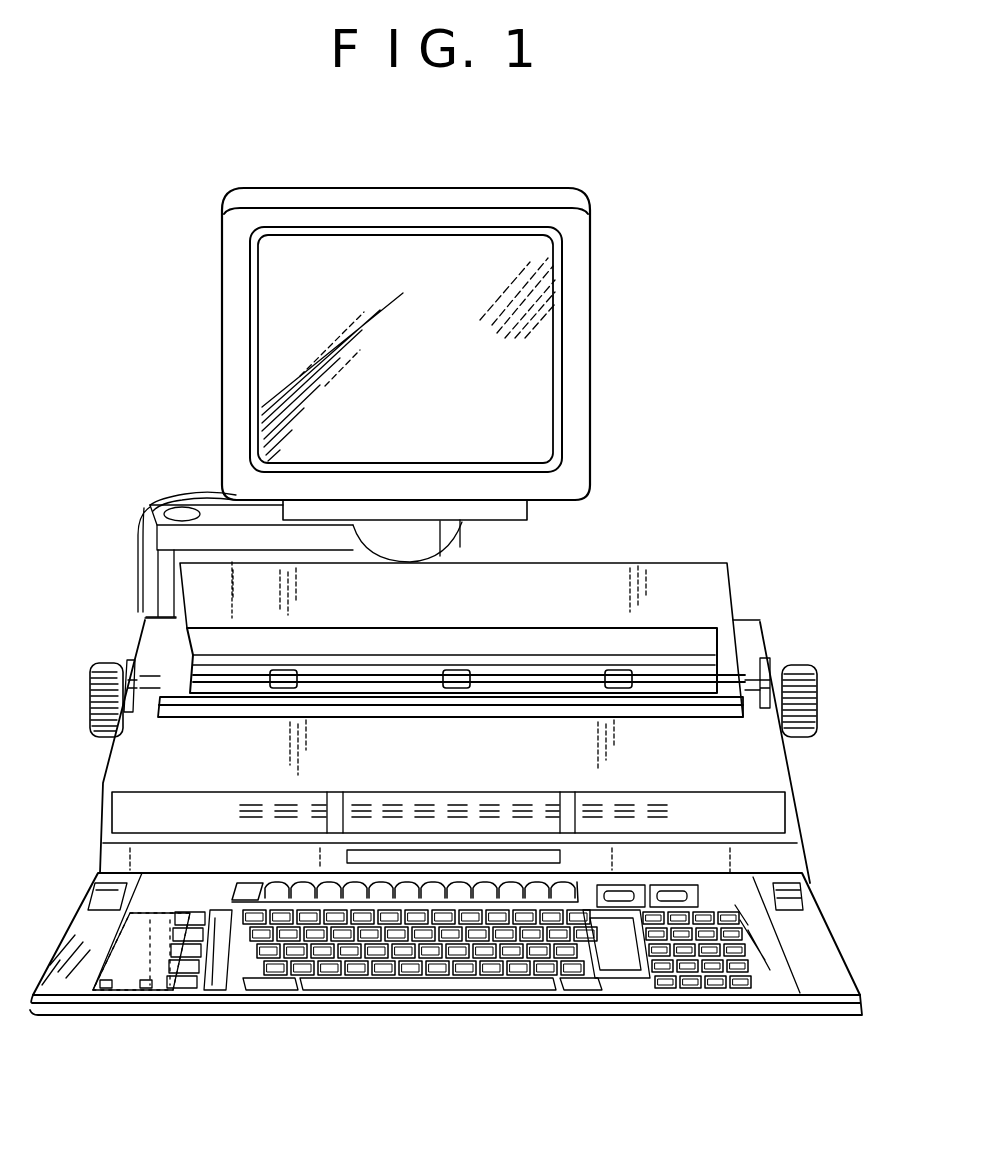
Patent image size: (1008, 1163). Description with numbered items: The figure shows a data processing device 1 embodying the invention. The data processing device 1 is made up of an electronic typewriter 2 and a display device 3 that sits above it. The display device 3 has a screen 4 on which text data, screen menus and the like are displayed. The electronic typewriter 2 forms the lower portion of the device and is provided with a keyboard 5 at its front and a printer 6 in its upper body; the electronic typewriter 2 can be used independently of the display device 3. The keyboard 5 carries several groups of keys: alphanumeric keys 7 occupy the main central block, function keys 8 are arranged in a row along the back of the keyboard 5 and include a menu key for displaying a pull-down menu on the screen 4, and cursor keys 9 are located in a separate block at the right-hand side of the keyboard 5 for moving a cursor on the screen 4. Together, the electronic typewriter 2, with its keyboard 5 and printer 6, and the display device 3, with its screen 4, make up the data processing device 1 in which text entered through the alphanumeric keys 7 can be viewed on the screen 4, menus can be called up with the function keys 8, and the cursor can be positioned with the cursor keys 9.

The data processing device 1 is at (714, 287).
The electronic typewriter 2 is at (733, 553).
The display device 3 is at (540, 186).
The screen 4 is at (372, 255).
The keyboard 5 is at (817, 894).
The printer 6 is at (577, 657).
The alphanumeric keys 7 is at (408, 950).
The function keys 8 is at (232, 888).
The cursor keys 9 is at (708, 984).